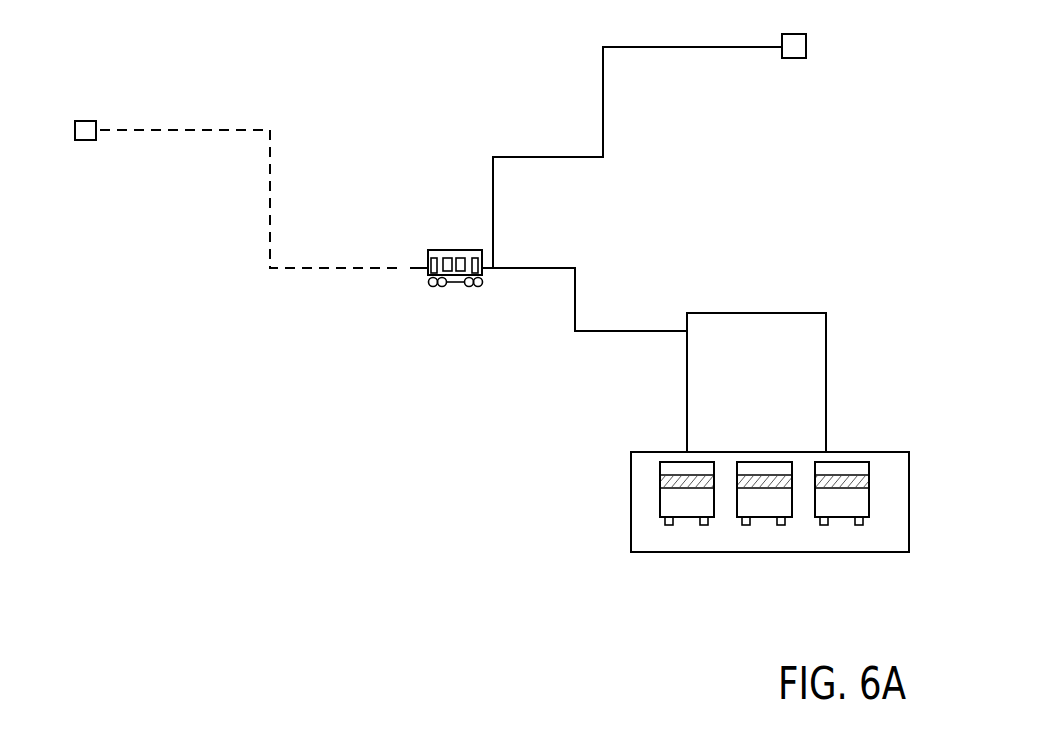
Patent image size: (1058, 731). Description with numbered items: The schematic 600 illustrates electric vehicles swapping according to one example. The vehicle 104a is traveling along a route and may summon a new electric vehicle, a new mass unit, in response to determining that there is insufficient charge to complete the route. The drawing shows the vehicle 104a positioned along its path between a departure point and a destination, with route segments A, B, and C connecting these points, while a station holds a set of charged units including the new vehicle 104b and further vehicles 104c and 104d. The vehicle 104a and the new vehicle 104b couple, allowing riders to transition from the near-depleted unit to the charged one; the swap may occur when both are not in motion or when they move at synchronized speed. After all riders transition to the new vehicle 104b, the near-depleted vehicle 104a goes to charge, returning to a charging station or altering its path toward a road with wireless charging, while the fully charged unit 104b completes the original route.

The schematic 600 is at (91, 60).
The vehicle 104a is at (462, 284).
The new vehicle 104b is at (660, 523).
The autonomous vehicle at station 104c is at (771, 519).
The autonomous vehicle at station 104d is at (854, 519).
The route segment to departure A is at (599, 72).
The route segment to vehicle B is at (405, 267).
The route segment to destination C is at (237, 128).